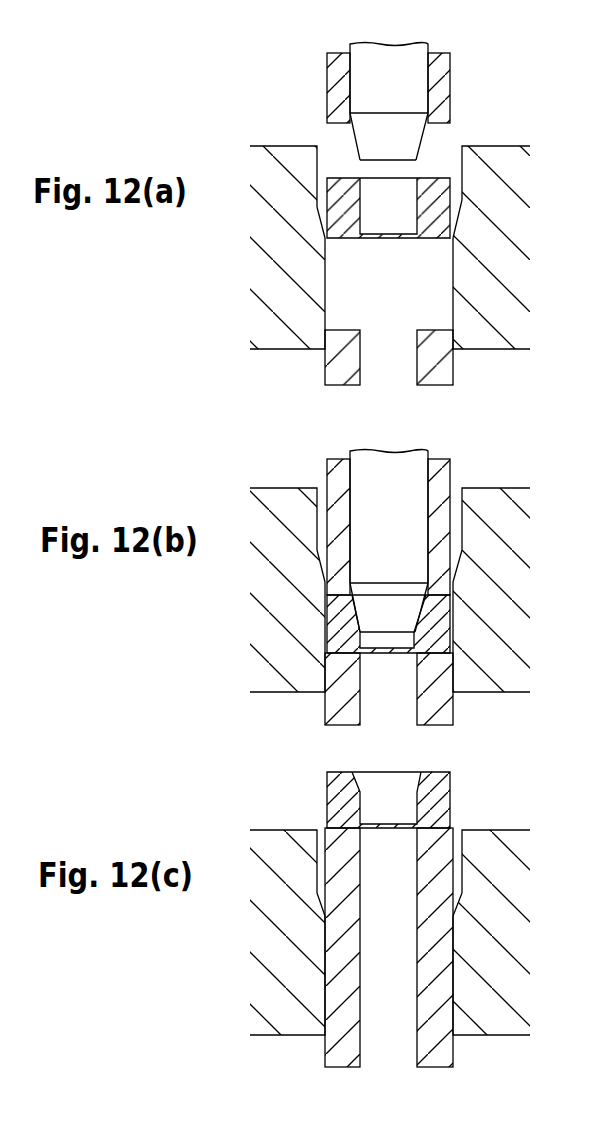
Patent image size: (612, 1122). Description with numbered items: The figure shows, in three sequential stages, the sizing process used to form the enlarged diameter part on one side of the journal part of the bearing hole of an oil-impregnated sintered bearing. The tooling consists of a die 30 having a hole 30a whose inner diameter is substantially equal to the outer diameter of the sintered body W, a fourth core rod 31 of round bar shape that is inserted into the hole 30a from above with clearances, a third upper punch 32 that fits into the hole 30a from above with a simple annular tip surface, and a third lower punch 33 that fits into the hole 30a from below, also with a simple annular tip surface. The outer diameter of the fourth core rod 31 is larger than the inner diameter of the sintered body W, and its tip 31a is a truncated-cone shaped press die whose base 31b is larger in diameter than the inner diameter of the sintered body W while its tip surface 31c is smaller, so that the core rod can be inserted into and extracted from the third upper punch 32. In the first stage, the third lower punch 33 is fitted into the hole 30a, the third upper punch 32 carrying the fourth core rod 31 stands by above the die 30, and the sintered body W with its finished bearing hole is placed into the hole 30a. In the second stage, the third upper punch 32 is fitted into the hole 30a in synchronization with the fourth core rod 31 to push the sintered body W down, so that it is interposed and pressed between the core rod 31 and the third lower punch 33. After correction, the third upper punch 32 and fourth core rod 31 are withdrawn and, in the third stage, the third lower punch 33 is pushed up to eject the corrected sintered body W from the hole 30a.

In FIG. 12A, the die 30 is at (493, 153).
In FIG. 12B, the die 30 is at (493, 497).
In FIG. 12C, the die 30 is at (493, 838).
In FIG. 12A, the hole 30a is at (325, 270).
In FIG. 12B, the hole 30a is at (327, 675).
In FIG. 12C, the hole 30a is at (327, 1010).
In FIG. 12A, the fourth core rod 31 is at (415, 52).
In FIG. 12B, the fourth core rod 31 is at (413, 457).
In FIG. 12A, the tip 31a is at (413, 140).
In FIG. 12B, the tip 31a is at (370, 615).
In FIG. 12A, the base 31b is at (393, 112).
In FIG. 12B, the base 31b is at (407, 583).
In FIG. 12A, the tip surface 31c is at (402, 161).
In FIG. 12B, the tip surface 31c is at (397, 638).
In FIG. 12A, the third upper punch 32 is at (333, 87).
In FIG. 12B, the third upper punch 32 is at (445, 478).
In FIG. 12A, the third lower punch 33 is at (443, 367).
In FIG. 12B, the third lower punch 33 is at (440, 697).
In FIG. 12C, the third lower punch 33 is at (440, 1042).
In FIG. 12A, the sintered body W is at (348, 178).
In FIG. 12B, the sintered body W is at (447, 618).
In FIG. 12C, the sintered body W is at (332, 793).